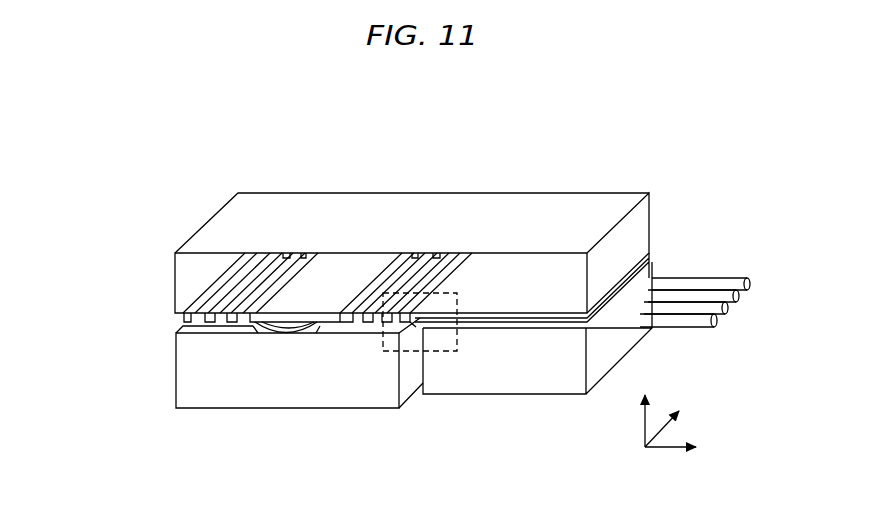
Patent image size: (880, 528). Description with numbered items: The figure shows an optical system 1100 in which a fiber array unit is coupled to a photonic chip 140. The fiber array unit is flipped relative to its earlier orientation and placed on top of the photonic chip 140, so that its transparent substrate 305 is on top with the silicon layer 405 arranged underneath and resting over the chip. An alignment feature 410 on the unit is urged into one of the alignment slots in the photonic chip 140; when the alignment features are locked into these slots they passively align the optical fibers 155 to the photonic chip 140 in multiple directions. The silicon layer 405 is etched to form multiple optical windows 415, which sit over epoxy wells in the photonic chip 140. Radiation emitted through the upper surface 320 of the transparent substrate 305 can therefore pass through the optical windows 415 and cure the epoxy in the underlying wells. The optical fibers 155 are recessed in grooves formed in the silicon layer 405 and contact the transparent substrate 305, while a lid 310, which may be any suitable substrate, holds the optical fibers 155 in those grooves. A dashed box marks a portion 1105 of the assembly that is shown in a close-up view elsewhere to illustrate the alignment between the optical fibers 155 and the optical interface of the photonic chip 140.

The optical system 1100 is at (670, 132).
The upper surface 320 is at (262, 190).
The optical windows 415 is at (283, 253).
The transparent substrate 305 is at (536, 193).
The silicon layer 405 is at (180, 321).
The photonic chip 140 is at (177, 381).
The alignment feature 410 is at (288, 328).
The portion 1105 is at (443, 352).
The lid 310 is at (557, 397).
The optical fibers 155 is at (742, 310).